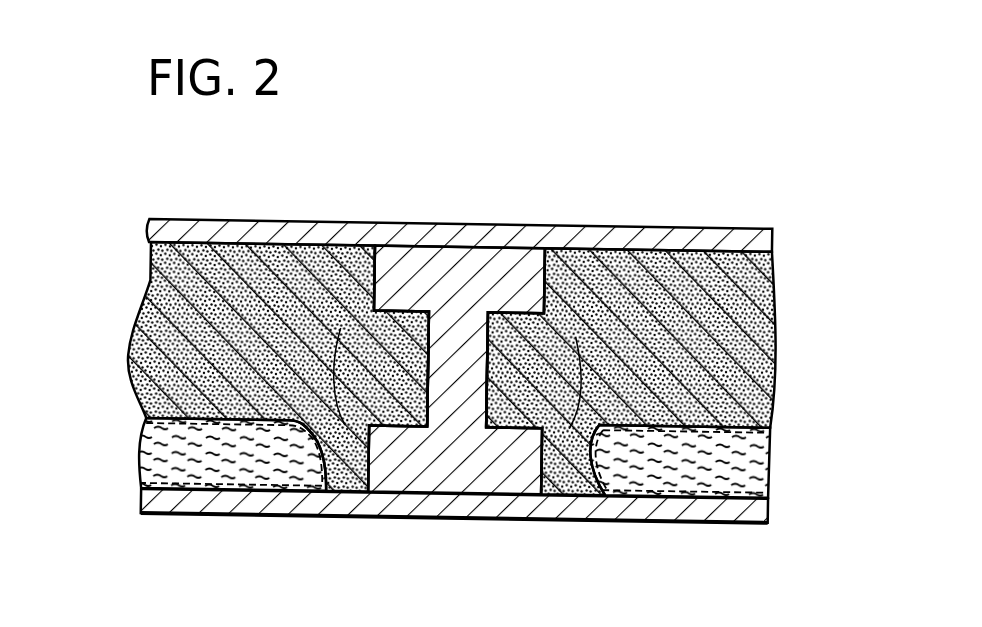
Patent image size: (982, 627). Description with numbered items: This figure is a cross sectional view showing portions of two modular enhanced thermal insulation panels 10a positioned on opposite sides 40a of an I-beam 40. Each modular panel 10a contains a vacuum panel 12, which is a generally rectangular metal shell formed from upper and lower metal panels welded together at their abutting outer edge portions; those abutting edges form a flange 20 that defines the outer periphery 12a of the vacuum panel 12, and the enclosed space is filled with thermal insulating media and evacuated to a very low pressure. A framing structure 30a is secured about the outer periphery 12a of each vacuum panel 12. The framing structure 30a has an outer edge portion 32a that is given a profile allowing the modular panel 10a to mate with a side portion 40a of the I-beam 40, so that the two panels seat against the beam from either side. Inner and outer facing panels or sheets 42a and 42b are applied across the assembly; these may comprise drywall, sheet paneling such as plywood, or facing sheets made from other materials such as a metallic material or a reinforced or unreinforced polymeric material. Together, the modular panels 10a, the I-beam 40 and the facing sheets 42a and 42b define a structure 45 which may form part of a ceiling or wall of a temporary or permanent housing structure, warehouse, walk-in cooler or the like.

The structure 45 is at (452, 321).
The modular panel 10a is at (451, 370).
The framing structure 30a is at (451, 370).
The vacuum panel 12 is at (454, 458).
The outer periphery 12a is at (457, 369).
The flange 20 is at (455, 458).
The I-beam 40 is at (456, 370).
The side portion 40a is at (458, 337).
The outer edge portion 32a is at (455, 419).
The inner facing sheet 42a is at (454, 506).
The outer facing sheet 42b is at (460, 235).